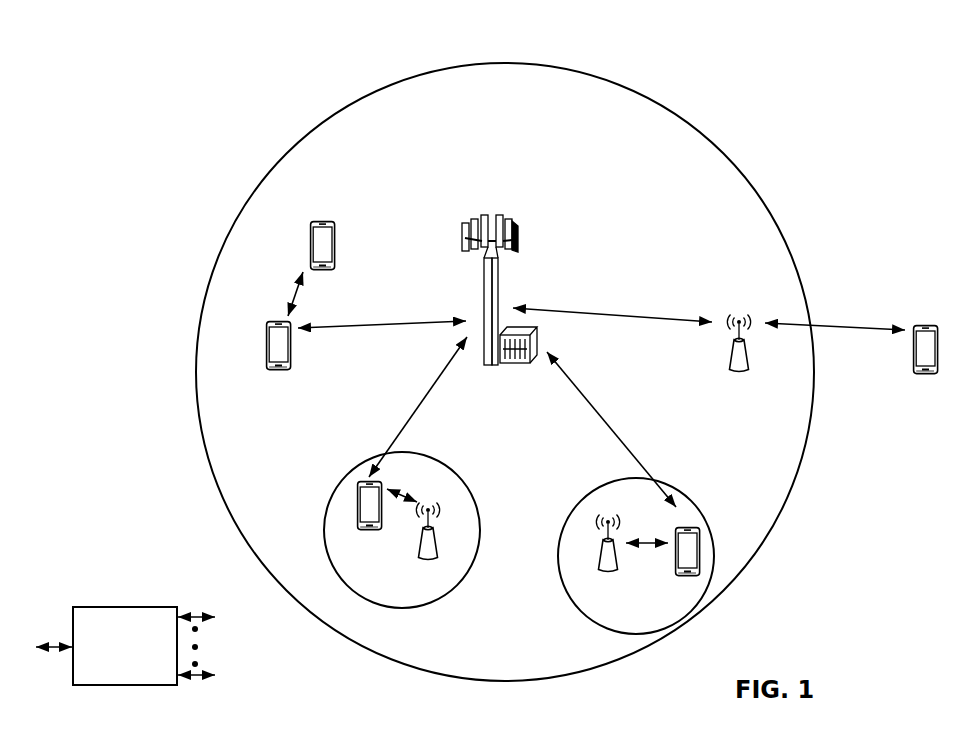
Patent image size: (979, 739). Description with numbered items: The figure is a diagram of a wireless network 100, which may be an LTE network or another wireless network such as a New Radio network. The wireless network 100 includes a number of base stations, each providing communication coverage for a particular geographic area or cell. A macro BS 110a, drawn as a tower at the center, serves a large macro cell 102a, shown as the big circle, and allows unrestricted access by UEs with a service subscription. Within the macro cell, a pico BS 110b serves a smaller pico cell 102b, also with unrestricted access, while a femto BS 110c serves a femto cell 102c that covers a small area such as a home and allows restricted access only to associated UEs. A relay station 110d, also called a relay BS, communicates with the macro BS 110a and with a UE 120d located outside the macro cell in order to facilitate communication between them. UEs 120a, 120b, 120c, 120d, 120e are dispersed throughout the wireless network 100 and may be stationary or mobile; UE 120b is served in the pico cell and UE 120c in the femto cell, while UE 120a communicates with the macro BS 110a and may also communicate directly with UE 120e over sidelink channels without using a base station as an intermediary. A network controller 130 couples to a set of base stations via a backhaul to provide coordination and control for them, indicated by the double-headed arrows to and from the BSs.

The wireless network 100 is at (112, 57).
The macro cell 102a is at (718, 141).
The pico cell 102b is at (466, 482).
The femto cell 102c is at (578, 487).
The macro BS 110a is at (495, 212).
The pico BS 110b is at (443, 548).
The femto BS 110c is at (598, 555).
The relay station 110d is at (738, 313).
The UE 120a is at (266, 339).
The UE 120b is at (360, 531).
The UE 120c is at (680, 574).
The UE 120d is at (934, 325).
The UE 120e is at (316, 230).
The network controller 130 is at (123, 606).